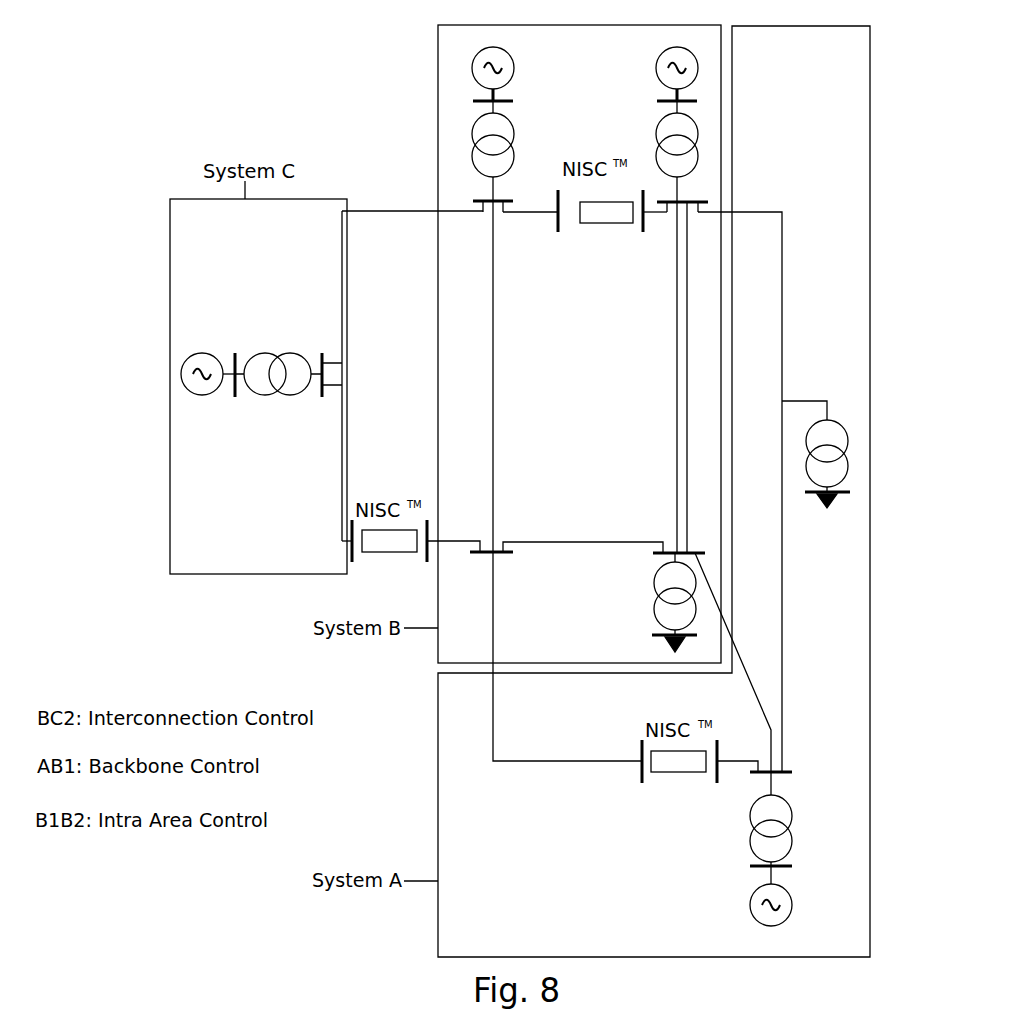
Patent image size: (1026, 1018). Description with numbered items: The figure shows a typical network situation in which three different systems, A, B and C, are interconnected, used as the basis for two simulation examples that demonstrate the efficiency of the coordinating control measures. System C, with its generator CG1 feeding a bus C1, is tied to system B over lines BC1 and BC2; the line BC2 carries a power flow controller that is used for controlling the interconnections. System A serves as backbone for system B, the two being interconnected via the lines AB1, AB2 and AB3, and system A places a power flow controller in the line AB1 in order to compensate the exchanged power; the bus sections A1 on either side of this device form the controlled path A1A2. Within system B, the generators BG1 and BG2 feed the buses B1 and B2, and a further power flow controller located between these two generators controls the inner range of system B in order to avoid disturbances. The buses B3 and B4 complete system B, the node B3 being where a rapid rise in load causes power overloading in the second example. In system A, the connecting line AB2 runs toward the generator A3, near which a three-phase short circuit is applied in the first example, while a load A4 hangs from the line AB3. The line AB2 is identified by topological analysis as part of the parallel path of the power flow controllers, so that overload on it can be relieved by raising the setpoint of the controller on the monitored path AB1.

The generator BG1 of system B BG1 is at (518, 80).
The generator BG2 of system B BG2 is at (650, 80).
The bus B1 of system B B1 is at (483, 162).
The bus B2 of system B B2 is at (684, 162).
The node B3 is at (566, 394).
The bus B4 of system B B4 is at (666, 427).
The interconnection line BC1 between systems B and C BC1 is at (504, 365).
The line BC2 is at (411, 554).
The generator CG1 is at (486, 639).
The bus C1 of system C C1 is at (288, 388).
The line AB1 is at (567, 678).
The connecting line AB2 is at (737, 662).
The line AB3 is at (746, 477).
The bus A1 of system A A1 is at (685, 767).
The intra area line A1A2 with PFC A1A2 is at (678, 784).
The generator A3 is at (791, 813).
The load A4 of system A A4 is at (816, 442).